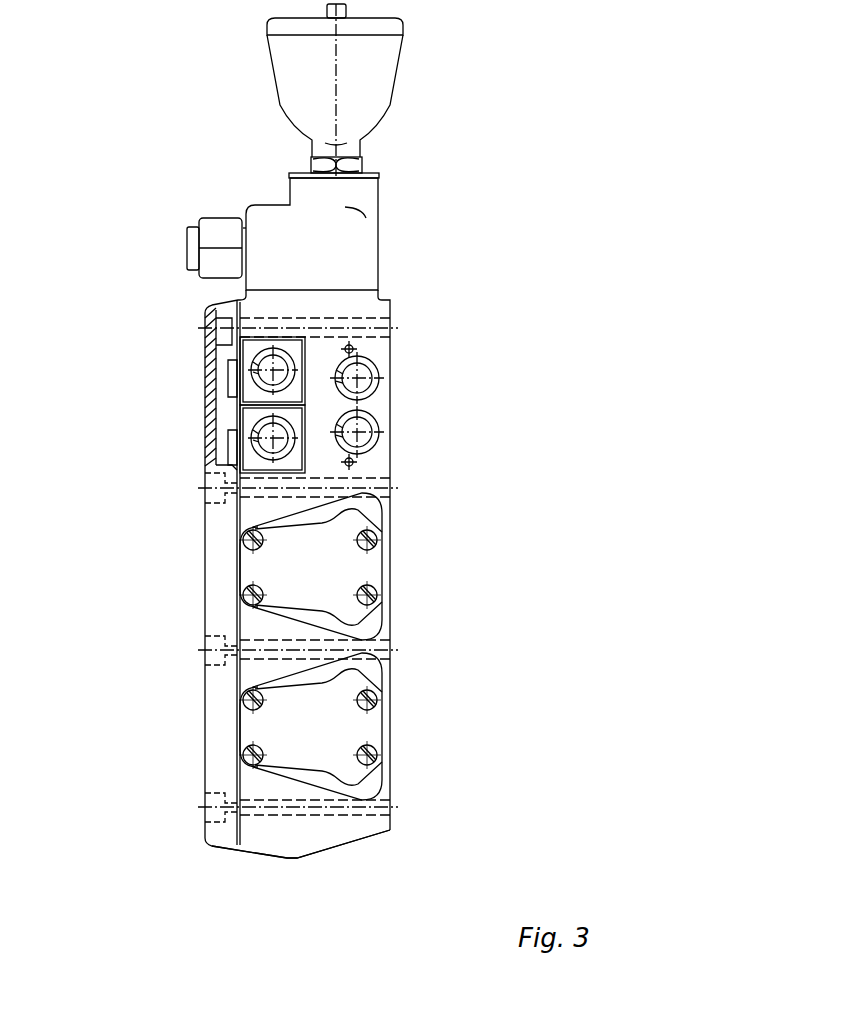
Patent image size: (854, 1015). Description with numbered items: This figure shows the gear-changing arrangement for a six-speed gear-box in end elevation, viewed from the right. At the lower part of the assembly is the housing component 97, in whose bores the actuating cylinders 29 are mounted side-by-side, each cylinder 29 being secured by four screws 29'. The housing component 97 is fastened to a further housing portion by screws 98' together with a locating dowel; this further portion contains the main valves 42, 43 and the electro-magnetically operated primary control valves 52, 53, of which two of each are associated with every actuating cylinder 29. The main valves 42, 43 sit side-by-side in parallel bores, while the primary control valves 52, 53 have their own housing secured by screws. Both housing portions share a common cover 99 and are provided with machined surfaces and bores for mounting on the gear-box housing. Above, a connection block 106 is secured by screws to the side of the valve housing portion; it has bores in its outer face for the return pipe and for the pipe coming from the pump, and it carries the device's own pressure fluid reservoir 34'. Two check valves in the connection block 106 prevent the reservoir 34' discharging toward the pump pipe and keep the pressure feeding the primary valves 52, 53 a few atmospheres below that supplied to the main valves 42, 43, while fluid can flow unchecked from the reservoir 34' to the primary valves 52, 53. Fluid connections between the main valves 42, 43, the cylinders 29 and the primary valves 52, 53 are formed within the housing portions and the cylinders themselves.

The pressure fluid reservoir 34' is at (399, 91).
The connection block 106 is at (352, 248).
The screws 98' is at (438, 397).
The main valve 43 is at (390, 368).
The main valve 42 is at (390, 423).
The primary control valve 53 is at (257, 382).
The primary control valve 52 is at (258, 450).
The cover 99 is at (228, 583).
The actuating cylinder 29 is at (383, 646).
The screws 29' is at (387, 647).
The housing component 97 is at (313, 830).